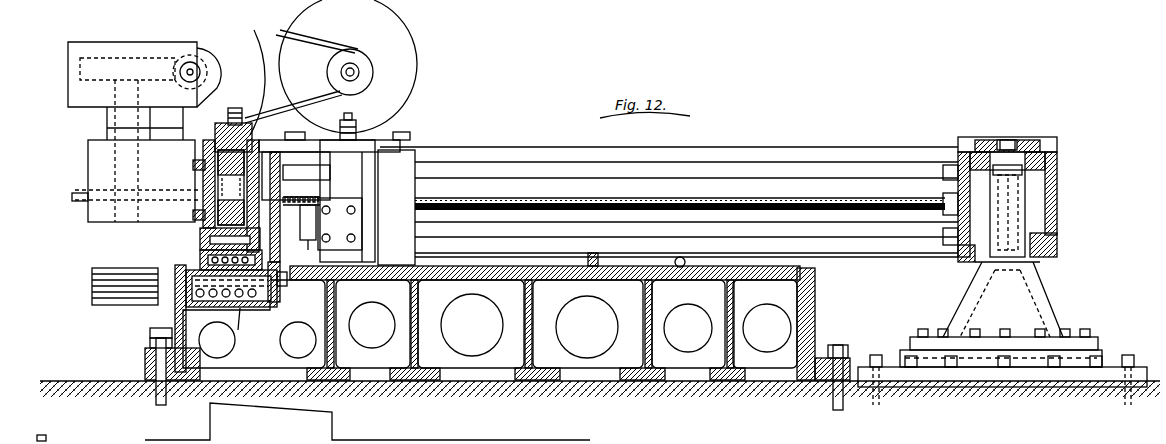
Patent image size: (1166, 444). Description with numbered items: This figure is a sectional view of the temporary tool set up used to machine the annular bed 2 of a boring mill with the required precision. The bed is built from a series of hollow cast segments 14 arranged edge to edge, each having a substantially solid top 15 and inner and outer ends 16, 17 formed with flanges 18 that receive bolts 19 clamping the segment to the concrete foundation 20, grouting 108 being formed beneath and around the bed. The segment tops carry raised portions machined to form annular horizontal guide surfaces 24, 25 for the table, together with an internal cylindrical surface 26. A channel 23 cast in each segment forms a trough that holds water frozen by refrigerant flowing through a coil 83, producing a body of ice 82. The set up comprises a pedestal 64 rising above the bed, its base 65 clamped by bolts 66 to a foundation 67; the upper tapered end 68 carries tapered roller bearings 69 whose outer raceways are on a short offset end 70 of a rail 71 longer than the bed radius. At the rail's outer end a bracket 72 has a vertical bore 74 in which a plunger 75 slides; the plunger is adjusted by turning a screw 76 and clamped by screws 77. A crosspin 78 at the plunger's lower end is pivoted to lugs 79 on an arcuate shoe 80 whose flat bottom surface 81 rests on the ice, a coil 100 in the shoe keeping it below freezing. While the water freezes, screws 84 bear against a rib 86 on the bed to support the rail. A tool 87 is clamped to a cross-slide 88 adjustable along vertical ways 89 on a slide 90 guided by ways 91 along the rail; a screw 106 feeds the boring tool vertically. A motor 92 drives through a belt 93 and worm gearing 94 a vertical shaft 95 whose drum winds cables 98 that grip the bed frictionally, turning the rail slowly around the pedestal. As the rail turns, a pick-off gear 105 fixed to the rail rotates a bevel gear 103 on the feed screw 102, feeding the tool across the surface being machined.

The bed 2 is at (718, 385).
The bed segment 14 is at (635, 385).
The segment top 15 is at (520, 282).
The inner end 16 is at (800, 340).
The outer end 17 is at (196, 340).
The flange 18 is at (155, 385).
The bolt 19 is at (162, 385).
The concrete foundation 20 is at (672, 385).
The channel 23 is at (252, 323).
The horizontal guide surface 24 is at (400, 266).
The horizontal guide surface 25 is at (680, 270).
The internal cylindrical surface 26 is at (798, 320).
The pedestal 64 is at (963, 304).
The pedestal base 65 is at (1068, 360).
The bolt 66 is at (880, 355).
The foundation 67 is at (988, 385).
The tapered end 68 is at (1020, 212).
The tapered roller bearing 69 is at (1057, 160).
The offset end 70 is at (1055, 190).
The rail 71 is at (822, 158).
The bracket 72 is at (203, 170).
The vertical bore 74 is at (275, 190).
The plunger 75 is at (220, 190).
The screw 76 is at (244, 122).
The clamping screw 77 is at (200, 163).
The crosspin 78 is at (200, 240).
The lug 79 is at (290, 200).
The arcuate shoe 80 is at (200, 262).
The bottom surface 81 is at (170, 305).
The ice 82 is at (282, 298).
The coil 83 is at (276, 308).
The screw 84 is at (283, 255).
The rib 86 is at (288, 282).
The tool 87 is at (348, 280).
The cross-slide 88 is at (372, 140).
The vertical ways 89 is at (345, 125).
The slide 90 is at (412, 172).
The ways 91 is at (528, 165).
The motor 92 is at (410, 62).
The belt 93 is at (309, 76).
The worm gearing 94 is at (200, 56).
The vertical shaft 95 is at (115, 162).
The cable 98 is at (92, 293).
The coil 100 is at (254, 324).
The screw 102 is at (607, 200).
The bevel gear 103 is at (958, 258).
The pick-off gear 105 is at (1025, 137).
The screw 106 is at (347, 201).
The grouting 108 is at (455, 385).